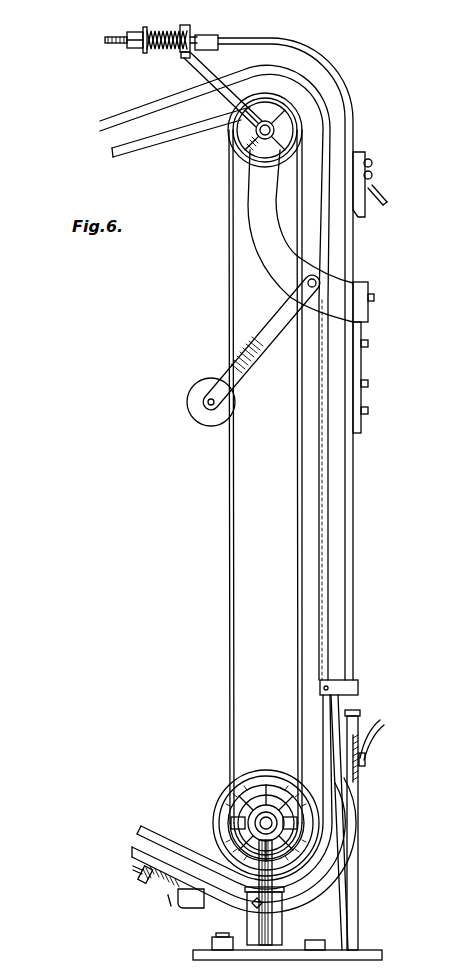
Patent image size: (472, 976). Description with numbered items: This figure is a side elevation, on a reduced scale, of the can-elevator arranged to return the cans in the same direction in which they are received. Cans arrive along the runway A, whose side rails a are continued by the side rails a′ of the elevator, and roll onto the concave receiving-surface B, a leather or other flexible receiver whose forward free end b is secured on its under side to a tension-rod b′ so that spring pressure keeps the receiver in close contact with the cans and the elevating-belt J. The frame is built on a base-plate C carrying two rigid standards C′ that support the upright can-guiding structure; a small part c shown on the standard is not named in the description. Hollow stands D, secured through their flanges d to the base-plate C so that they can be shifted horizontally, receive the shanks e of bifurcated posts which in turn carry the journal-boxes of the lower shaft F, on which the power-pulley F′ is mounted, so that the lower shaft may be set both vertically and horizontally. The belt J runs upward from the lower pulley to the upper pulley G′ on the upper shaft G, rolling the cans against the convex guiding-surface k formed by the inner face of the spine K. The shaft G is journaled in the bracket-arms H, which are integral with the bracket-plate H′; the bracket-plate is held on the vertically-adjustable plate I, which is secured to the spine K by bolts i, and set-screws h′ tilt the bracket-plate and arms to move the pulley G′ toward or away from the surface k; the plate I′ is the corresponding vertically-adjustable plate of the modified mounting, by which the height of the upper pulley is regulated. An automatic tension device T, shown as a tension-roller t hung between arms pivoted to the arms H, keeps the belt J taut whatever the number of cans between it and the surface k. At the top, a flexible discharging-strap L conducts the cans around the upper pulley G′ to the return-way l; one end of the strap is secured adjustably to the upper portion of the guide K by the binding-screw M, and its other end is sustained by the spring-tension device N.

The spring-tension device N is at (180, 10).
The flexible discharging-surface strap L is at (340, 53).
The convex can-guiding surface k is at (335, 520).
The side rails of the elevator a′ is at (330, 756).
The side rails of the runway a is at (162, 838).
The runway A is at (117, 830).
The return-way l is at (181, 132).
The upper shaft G is at (256, 131).
The upper pulley G′ is at (290, 153).
The elevator-belt J is at (255, 494).
The bracket-arms H is at (292, 262).
The automatic tension device T is at (304, 366).
The tension-roller t is at (211, 402).
The backbone or spine K is at (375, 555).
The binding-screw M is at (400, 157).
The vertically-adjustable plate I′ is at (362, 369).
The vertically-adjustable plate I is at (388, 284).
The set-screws h′ is at (377, 324).
The bracket-plate H′ is at (384, 322).
The bolts i is at (370, 401).
The rigid standards C′ is at (355, 822).
The lug c is at (369, 764).
The concave receiving-surface B is at (244, 852).
The free end of the receiver b is at (164, 866).
The tension-rod b′ is at (190, 907).
The lower shaft F is at (267, 818).
The power-pulley F′ is at (230, 782).
The shanks of the bifurcated posts e is at (260, 890).
The hollow stands D is at (264, 916).
The flanges d is at (281, 941).
The base-plate C is at (287, 963).